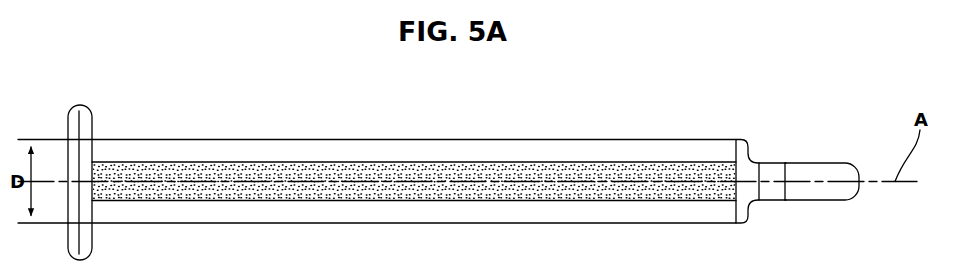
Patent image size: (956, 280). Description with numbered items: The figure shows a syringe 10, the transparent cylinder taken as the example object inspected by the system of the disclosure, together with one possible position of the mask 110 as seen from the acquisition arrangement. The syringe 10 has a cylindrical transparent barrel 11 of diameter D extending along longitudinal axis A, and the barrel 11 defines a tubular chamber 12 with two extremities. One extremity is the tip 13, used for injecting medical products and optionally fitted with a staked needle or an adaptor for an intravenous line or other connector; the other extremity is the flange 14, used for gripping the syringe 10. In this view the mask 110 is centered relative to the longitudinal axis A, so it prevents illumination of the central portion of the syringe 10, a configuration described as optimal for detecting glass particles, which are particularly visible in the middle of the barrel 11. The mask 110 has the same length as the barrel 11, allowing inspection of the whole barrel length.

The syringe 10 is at (468, 101).
The cylindrical transparent barrel 11 is at (372, 137).
The tubular chamber 12 is at (642, 148).
The tip 13 is at (819, 168).
The flange 14 is at (84, 102).
The mask 110 is at (616, 190).